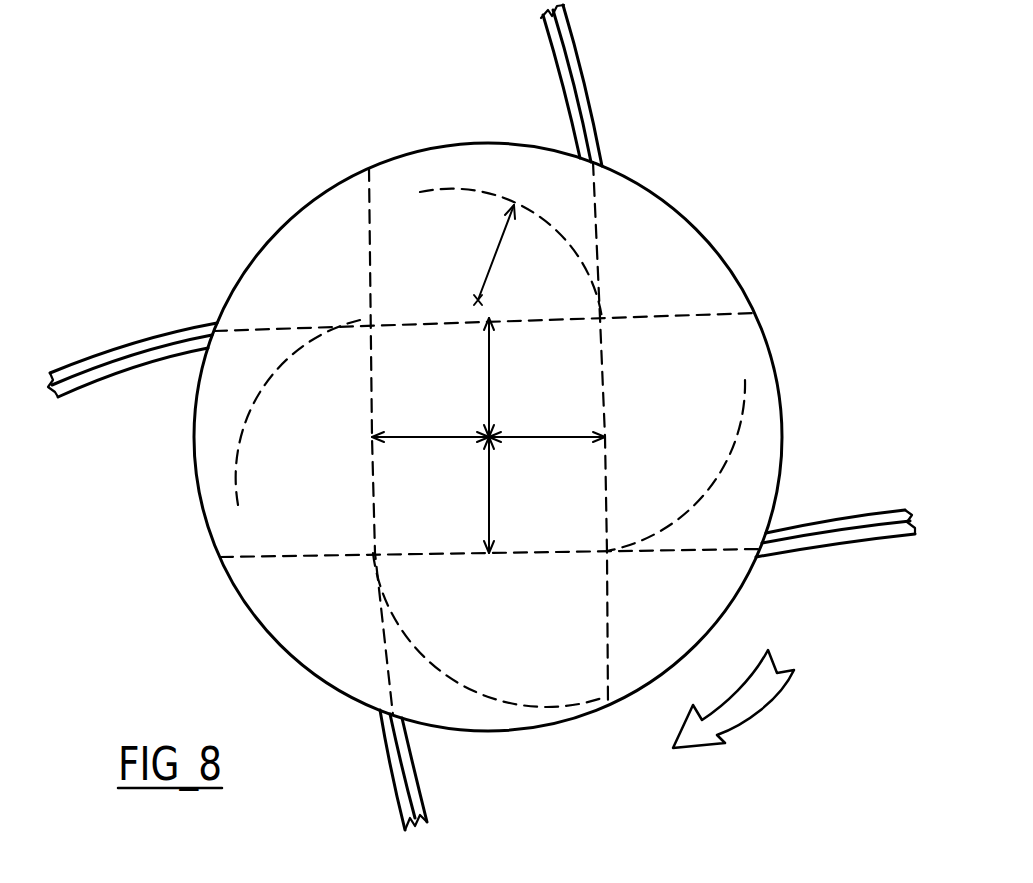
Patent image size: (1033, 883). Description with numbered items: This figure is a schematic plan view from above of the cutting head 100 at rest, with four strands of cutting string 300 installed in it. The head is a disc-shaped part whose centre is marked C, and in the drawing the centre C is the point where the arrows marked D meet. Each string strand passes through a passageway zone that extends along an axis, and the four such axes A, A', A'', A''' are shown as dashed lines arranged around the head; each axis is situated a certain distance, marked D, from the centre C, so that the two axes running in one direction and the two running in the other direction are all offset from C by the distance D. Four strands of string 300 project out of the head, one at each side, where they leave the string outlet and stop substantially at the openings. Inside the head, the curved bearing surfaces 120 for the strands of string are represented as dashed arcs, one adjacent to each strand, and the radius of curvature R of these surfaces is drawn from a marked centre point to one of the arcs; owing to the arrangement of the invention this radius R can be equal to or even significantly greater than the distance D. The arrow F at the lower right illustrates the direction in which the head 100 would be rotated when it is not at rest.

The tire / annular body 100 is at (277, 215).
The curved bearing surfaces 120 is at (526, 213).
The strands of string 300 is at (577, 56).
The centre of the disc-shaped part C is at (488, 435).
The distance D is at (490, 432).
The radius of curvature R is at (488, 255).
The axis A is at (342, 148).
The axis A' is at (604, 715).
The axis A'' is at (229, 606).
The axis A''' is at (731, 253).
The arrow F is at (747, 700).